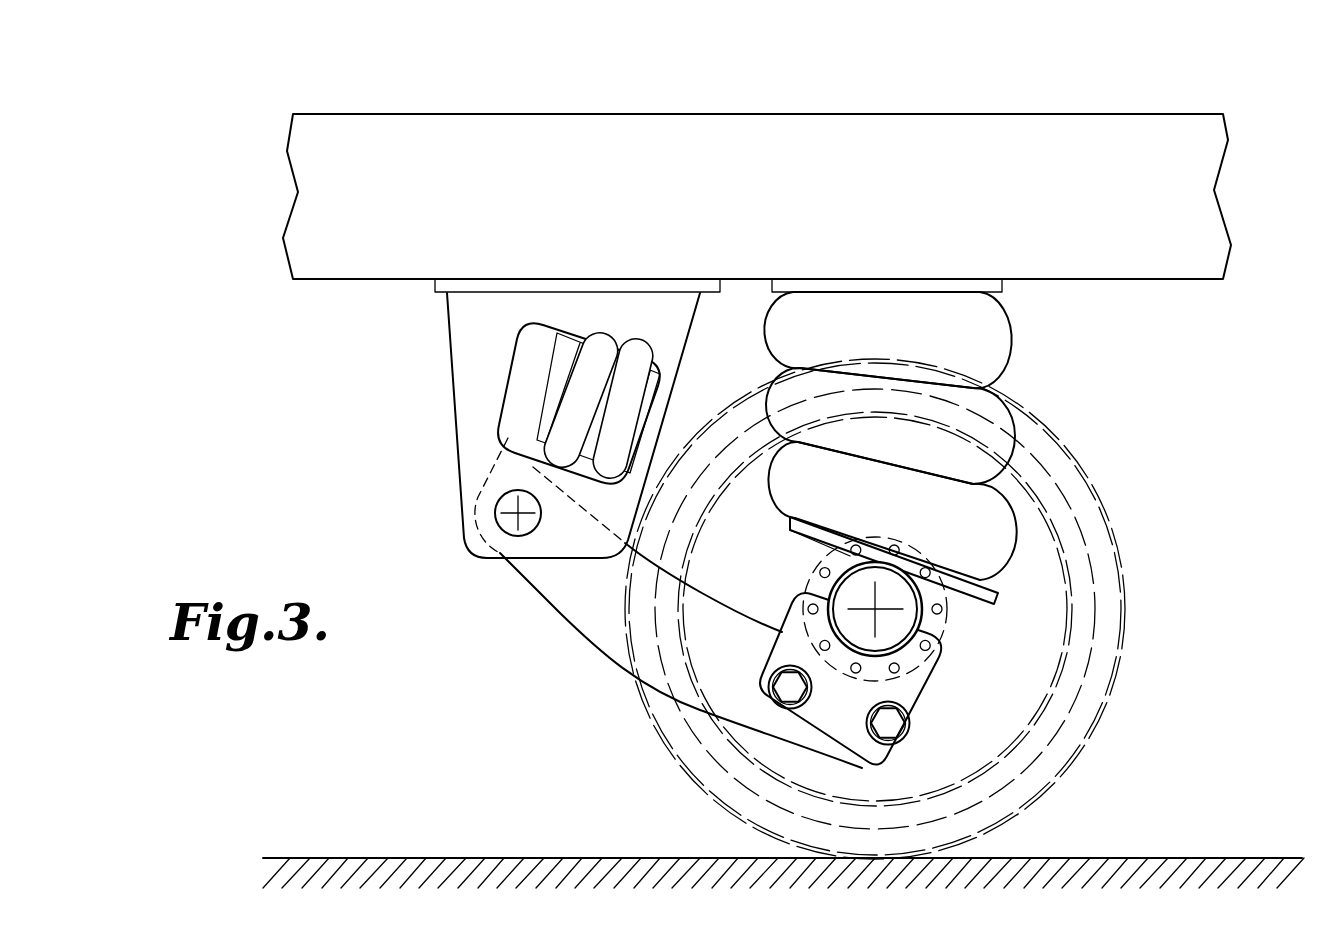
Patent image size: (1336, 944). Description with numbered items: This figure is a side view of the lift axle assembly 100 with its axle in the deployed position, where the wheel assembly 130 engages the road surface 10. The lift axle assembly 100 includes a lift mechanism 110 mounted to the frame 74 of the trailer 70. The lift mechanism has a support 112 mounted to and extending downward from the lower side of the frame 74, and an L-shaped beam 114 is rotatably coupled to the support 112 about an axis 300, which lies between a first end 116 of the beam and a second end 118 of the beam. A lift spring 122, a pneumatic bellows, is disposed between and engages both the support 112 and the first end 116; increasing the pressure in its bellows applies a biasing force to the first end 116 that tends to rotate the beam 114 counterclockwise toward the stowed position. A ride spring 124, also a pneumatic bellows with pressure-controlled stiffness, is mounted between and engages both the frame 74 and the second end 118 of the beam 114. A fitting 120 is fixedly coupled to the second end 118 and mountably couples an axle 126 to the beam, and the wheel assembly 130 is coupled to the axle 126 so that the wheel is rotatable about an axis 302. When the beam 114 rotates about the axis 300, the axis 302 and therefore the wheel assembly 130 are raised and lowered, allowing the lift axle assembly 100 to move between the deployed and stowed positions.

The road surface 10 is at (1228, 857).
The trailer 70 is at (1180, 63).
The frame 74 is at (393, 114).
The lift axle assembly 100 is at (333, 750).
The lift mechanism 110 is at (497, 568).
The support 112 is at (448, 322).
The L-shaped beam 114 is at (605, 652).
The first end of the beam 116 is at (512, 403).
The second end of the beam 118 is at (862, 768).
The fitting 120 is at (925, 722).
The lift spring 122 is at (553, 366).
The ride spring 124 is at (1002, 402).
The axle 126 is at (913, 603).
The wheel assembly 130 is at (1096, 495).
The axis 300 is at (499, 500).
The axis 302 is at (884, 622).